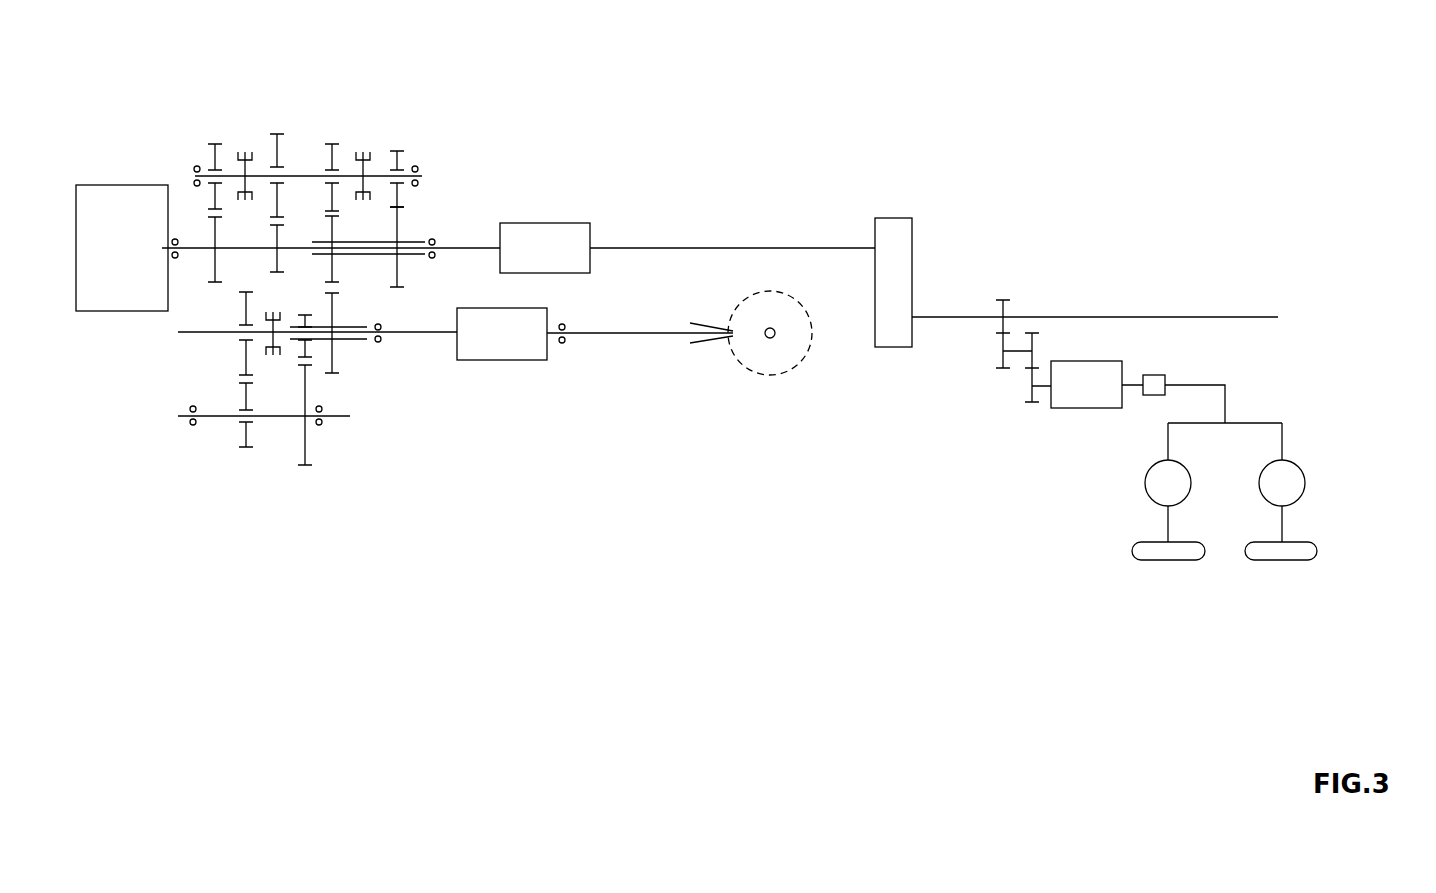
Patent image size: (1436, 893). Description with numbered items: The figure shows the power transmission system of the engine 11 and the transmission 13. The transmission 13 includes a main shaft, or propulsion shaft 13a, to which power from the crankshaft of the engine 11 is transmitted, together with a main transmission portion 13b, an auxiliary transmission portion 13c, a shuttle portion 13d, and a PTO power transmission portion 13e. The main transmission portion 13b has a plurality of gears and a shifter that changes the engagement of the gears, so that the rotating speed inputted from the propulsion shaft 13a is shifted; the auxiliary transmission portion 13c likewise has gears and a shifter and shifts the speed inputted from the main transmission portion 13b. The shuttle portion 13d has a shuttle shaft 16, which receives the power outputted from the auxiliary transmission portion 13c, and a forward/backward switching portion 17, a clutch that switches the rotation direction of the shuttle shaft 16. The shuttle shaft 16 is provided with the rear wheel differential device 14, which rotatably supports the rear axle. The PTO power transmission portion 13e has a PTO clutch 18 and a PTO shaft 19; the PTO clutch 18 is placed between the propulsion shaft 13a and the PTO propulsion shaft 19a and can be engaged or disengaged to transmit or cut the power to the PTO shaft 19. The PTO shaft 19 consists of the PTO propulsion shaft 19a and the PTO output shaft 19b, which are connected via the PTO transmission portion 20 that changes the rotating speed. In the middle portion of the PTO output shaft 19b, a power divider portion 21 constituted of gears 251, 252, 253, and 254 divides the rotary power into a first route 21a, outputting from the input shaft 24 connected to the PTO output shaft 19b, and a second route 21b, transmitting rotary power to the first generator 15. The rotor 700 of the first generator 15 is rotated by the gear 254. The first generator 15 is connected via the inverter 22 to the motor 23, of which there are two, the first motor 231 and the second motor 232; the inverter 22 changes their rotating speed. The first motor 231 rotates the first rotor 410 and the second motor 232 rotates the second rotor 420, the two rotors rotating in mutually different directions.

The engine 11 is at (135, 311).
The transmission 13 is at (479, 135).
The main shaft (propulsion shaft) 13a is at (462, 248).
The main transmission portion 13b is at (324, 108).
The auxiliary transmission portion 13c is at (366, 447).
The shuttle portion 13d is at (526, 375).
The PTO power transmission portion 13e is at (583, 196).
The rear wheel differential device 14 is at (805, 352).
The first generator 15 is at (1100, 408).
The shuttle shaft 16 is at (677, 336).
The forward/backward switching portion 17 is at (547, 313).
The PTO clutch 18 is at (535, 233).
The PTO shaft 19 is at (995, 175).
The PTO propulsion shaft 19a is at (808, 248).
The PTO output shaft 19b is at (960, 315).
The PTO transmission portion 20 is at (893, 347).
The power divider portion 21 is at (1030, 302).
The first route 21a is at (1114, 287).
The second route 21b is at (1047, 435).
The inverter 22 is at (1150, 375).
The motor 23 is at (1367, 397).
The input shaft 24 is at (1237, 317).
The first motor 231 is at (1185, 468).
The second motor 232 is at (1305, 480).
The gear 251 is at (1000, 300).
The gear 252 is at (1003, 368).
The gear 253 is at (1032, 333).
The gear 254 is at (1032, 402).
The first rotor 410 is at (1180, 562).
The second rotor 420 is at (1292, 562).
The rotor 700 is at (1045, 386).